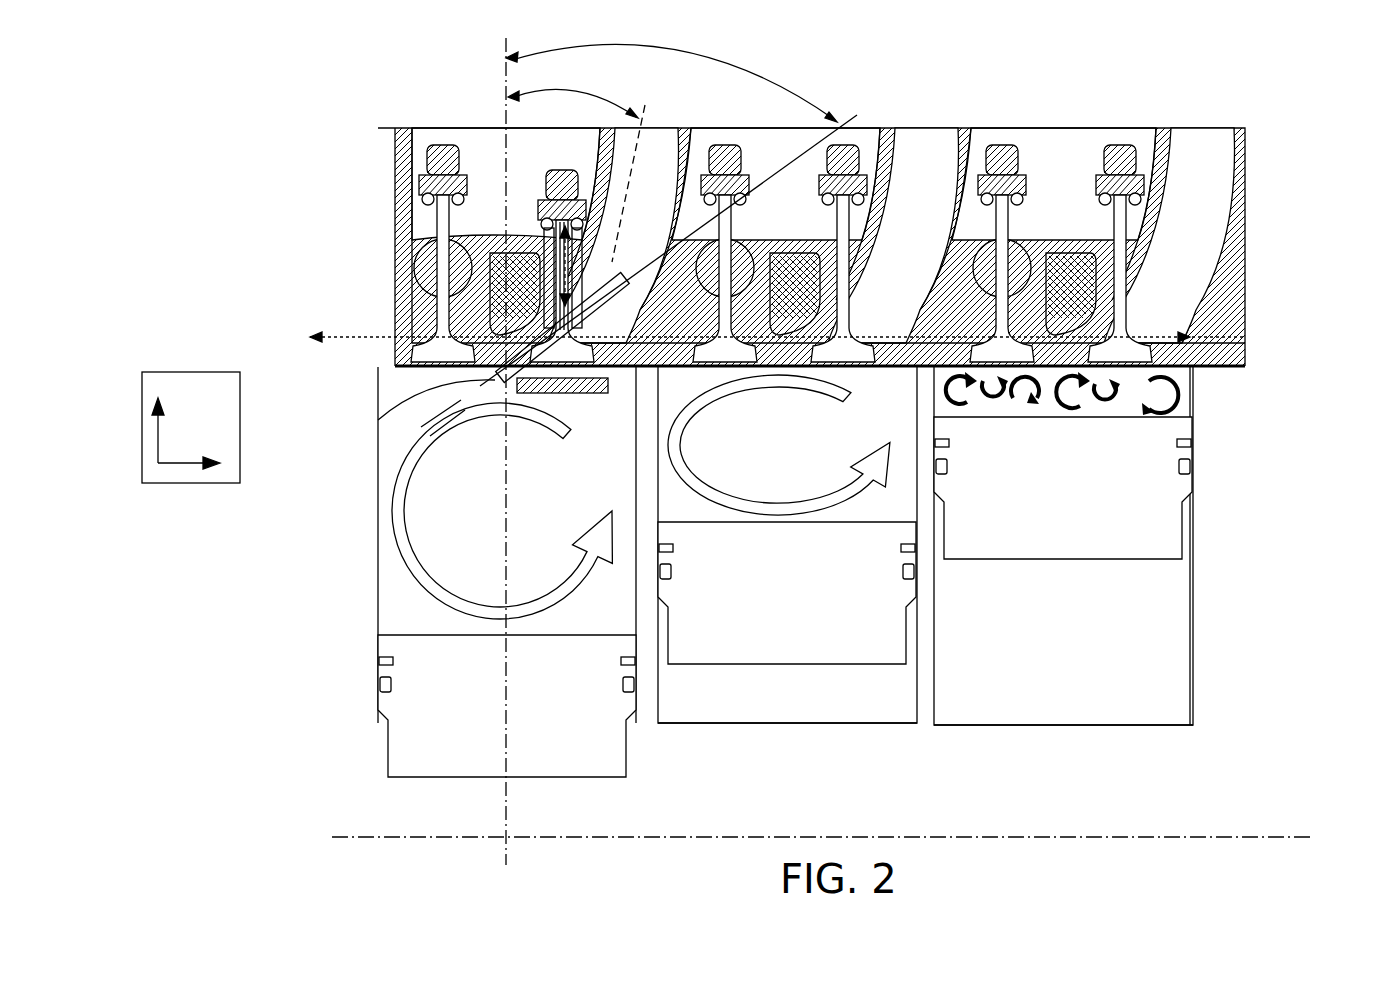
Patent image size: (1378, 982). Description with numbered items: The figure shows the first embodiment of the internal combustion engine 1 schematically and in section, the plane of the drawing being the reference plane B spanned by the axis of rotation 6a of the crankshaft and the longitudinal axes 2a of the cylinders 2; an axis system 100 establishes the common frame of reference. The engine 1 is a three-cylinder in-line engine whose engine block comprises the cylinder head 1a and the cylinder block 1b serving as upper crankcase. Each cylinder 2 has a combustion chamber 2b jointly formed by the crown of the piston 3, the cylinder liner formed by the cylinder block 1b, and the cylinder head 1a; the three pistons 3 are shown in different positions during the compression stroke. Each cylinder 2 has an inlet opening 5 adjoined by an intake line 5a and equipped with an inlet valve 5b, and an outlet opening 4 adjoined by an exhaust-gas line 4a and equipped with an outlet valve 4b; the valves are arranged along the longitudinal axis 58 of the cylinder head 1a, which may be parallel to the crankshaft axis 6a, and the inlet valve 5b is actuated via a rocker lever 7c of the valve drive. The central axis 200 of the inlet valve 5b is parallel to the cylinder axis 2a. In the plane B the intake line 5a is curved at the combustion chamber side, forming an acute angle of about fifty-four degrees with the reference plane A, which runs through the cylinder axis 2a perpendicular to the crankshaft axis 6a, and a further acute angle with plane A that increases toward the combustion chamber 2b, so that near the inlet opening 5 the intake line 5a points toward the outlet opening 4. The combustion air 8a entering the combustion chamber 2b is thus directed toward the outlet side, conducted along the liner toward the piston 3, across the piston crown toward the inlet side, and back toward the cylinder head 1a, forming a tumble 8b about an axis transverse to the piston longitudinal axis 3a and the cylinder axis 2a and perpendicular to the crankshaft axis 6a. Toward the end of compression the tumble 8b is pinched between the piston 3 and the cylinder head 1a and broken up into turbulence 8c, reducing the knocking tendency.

The internal combustion engine 1 is at (1302, 128).
The cylinder head 1a is at (1236, 346).
The cylinder block 1b is at (1292, 518).
The cylinder 2 is at (801, 603).
The longitudinal axis of the cylinder 2a is at (493, 448).
The piston longitudinal axis 3a is at (493, 448).
The combustion chamber 2b is at (1260, 424).
The piston 3 is at (785, 597).
The outlet opening 4 is at (395, 352).
The exhaust-gas line 4a is at (395, 263).
The outlet valve 4b is at (430, 150).
The inlet opening 5 is at (395, 328).
The intake line 5a is at (660, 160).
The inlet valve 5b is at (560, 172).
The longitudinal axis of the cylinder head 58 is at (345, 336).
The axis of rotation of the crankshaft 6a is at (817, 842).
The rocker lever 7c is at (590, 282).
The combustion air 8a is at (378, 420).
The tumble 8b is at (392, 510).
The turbulence 8c is at (1202, 378).
The axis system 100 is at (142, 428).
The central axis of the inlet valve 200 is at (557, 247).
The reference plane A is at (507, 798).
The reference plane B is at (821, 814).